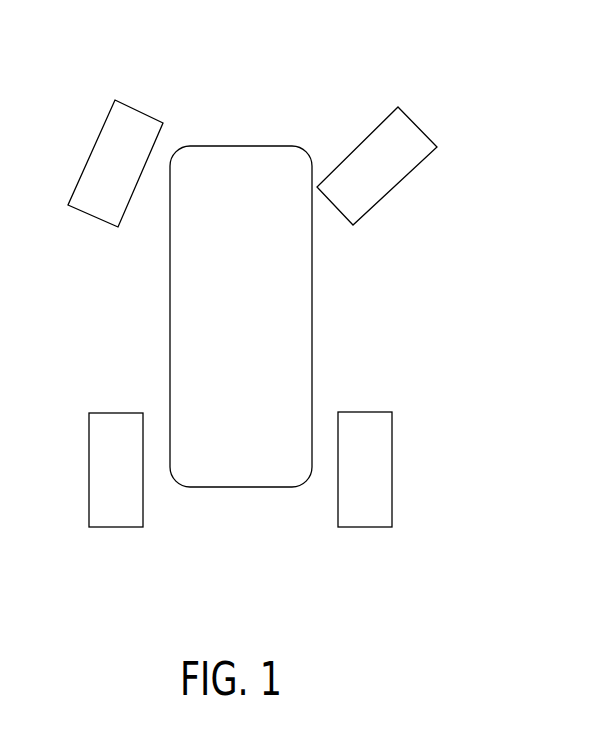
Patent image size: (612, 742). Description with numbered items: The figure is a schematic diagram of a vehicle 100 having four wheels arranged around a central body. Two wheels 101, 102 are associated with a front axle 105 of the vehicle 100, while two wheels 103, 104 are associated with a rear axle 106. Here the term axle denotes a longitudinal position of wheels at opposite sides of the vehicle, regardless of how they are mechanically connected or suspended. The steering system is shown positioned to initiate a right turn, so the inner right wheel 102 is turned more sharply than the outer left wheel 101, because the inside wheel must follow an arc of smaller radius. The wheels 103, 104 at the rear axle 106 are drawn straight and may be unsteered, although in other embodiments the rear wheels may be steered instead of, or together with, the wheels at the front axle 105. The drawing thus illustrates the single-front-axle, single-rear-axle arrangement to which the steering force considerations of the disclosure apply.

The vehicle 100 is at (237, 160).
The wheel 101 is at (115, 100).
The wheel 102 is at (398, 107).
The wheel 103 is at (115, 528).
The wheel 104 is at (365, 528).
The front axle 105 is at (414, 220).
The rear axle 106 is at (429, 427).